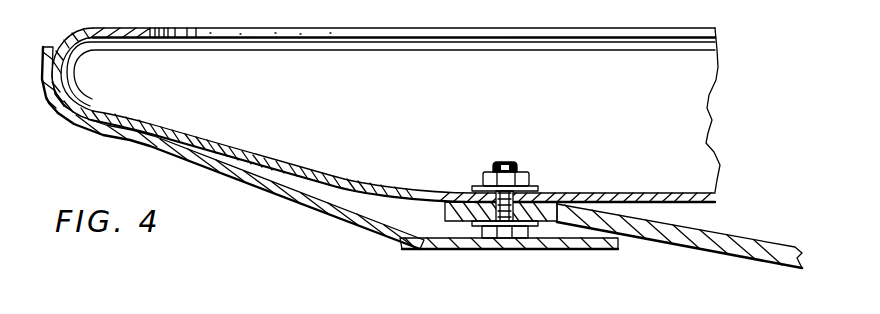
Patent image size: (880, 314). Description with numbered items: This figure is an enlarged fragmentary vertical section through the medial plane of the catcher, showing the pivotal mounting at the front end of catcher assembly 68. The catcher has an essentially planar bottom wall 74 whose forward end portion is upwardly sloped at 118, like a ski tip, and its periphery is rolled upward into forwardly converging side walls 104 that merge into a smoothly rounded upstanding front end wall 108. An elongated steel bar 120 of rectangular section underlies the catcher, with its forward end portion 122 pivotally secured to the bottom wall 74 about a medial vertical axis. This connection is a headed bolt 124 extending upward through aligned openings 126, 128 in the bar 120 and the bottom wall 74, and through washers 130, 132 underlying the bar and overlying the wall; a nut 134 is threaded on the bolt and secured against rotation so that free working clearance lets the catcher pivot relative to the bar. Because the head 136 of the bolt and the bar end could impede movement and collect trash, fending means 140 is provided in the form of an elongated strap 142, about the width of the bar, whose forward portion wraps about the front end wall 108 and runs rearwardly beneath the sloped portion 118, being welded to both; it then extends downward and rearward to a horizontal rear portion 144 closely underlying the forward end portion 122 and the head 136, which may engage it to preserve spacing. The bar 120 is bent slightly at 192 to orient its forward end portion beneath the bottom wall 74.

The panel assembly 68 is at (715, 125).
The bottom wall 74 is at (603, 190).
The upstanding side wall 104 is at (343, 65).
The front end wall 108 is at (53, 44).
The sloped bottom wall portion 118 is at (195, 148).
The bar 120 is at (765, 250).
The forward end portion of the bar 122 is at (455, 200).
The headed bolt 124 is at (474, 200).
The opening in the bar 126 is at (498, 238).
The opening in the catcher bottom wall 128 is at (527, 182).
The washer 130 is at (445, 212).
The washer 132 is at (480, 186).
The nut 134 is at (490, 175).
The head of the bolt 136 is at (523, 240).
The fending means 140 is at (345, 223).
The strap 142 is at (82, 118).
The rear portion of the strap 144 is at (618, 245).
The bend in the bar 192 is at (553, 210).